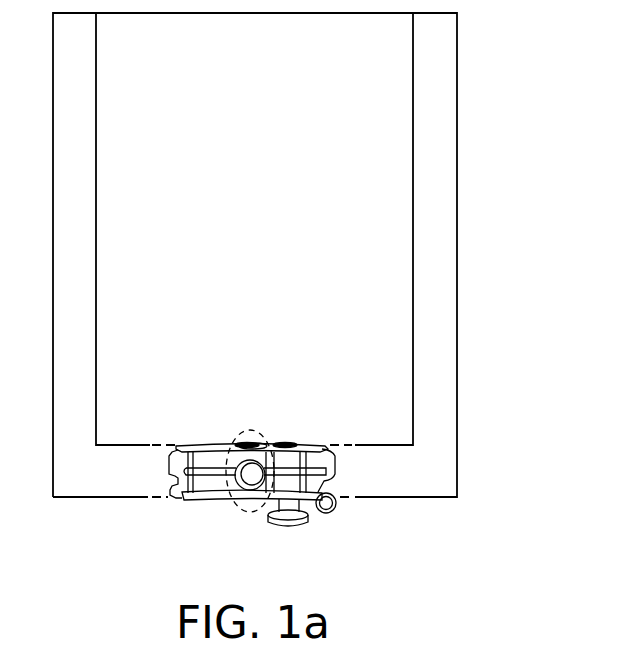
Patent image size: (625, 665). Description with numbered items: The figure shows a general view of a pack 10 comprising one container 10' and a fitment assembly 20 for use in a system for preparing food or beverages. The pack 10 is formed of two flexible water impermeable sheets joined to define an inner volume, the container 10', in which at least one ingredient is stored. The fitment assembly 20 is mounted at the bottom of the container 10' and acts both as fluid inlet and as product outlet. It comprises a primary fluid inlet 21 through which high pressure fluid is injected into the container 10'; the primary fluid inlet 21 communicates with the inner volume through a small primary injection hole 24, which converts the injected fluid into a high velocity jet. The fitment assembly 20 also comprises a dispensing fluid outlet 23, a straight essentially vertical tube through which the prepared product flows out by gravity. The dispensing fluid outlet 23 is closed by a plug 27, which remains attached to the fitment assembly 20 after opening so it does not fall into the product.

The pack 10 is at (301, 255).
The container 10' is at (310, 229).
The fitment assembly 20 is at (337, 468).
The primary fluid inlet 21 is at (237, 490).
The dispensing fluid outlet 23 is at (286, 517).
The primary injection hole 24 is at (253, 440).
The plug 27 is at (332, 511).